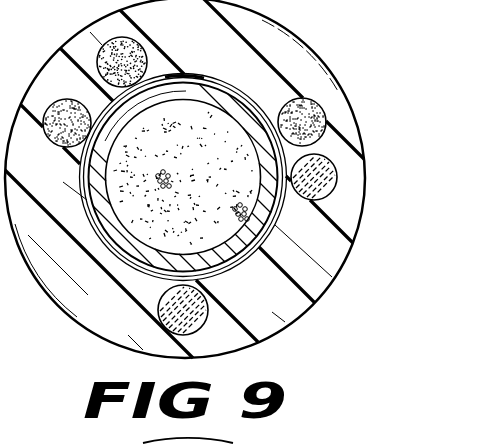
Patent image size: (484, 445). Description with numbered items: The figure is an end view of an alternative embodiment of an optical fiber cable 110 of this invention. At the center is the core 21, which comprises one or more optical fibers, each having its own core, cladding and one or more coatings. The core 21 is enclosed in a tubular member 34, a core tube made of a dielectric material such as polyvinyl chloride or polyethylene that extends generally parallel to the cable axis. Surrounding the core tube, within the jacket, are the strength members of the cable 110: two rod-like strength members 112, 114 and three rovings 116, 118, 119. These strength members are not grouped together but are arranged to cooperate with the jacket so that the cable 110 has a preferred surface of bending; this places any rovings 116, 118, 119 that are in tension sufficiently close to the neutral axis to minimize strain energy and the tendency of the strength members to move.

The cable 110 is at (306, 35).
The tubular member 34 is at (199, 76).
The core 21 is at (222, 258).
The roving 118 is at (140, 51).
The roving 116 is at (63, 148).
The roving 119 is at (323, 104).
The rod-like strength member 114 is at (334, 192).
The rod-like strength member 112 is at (158, 313).